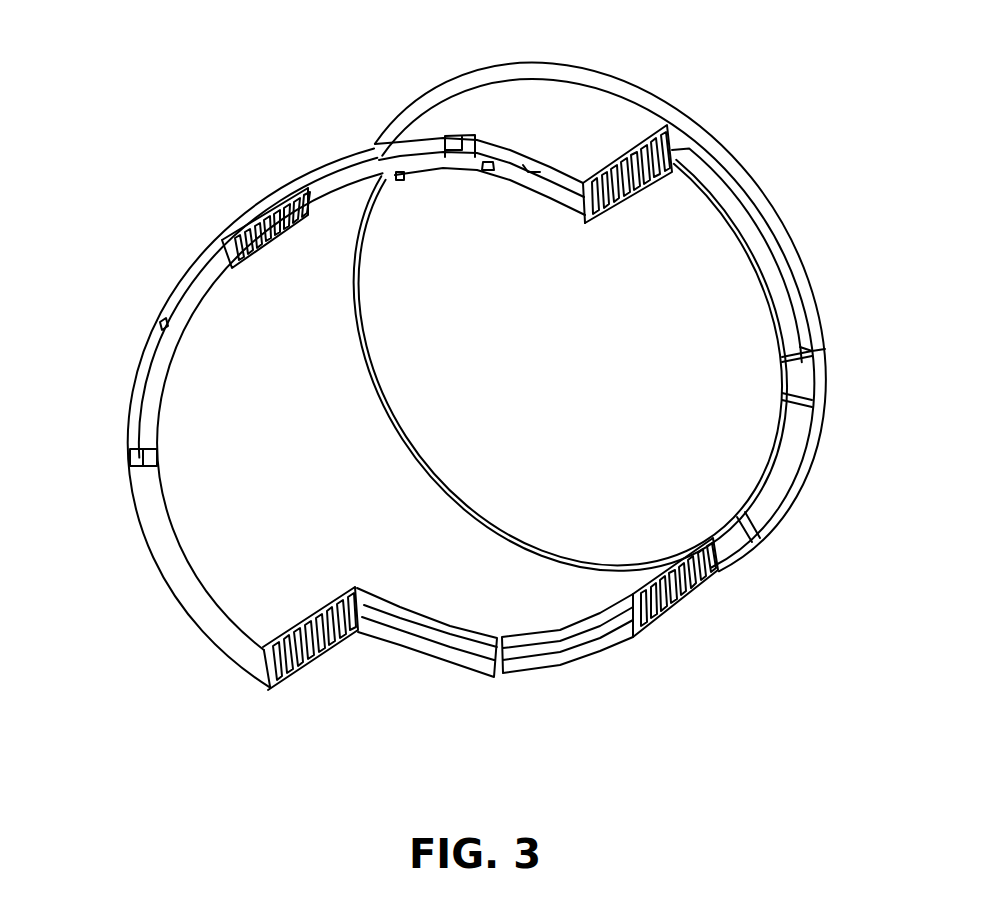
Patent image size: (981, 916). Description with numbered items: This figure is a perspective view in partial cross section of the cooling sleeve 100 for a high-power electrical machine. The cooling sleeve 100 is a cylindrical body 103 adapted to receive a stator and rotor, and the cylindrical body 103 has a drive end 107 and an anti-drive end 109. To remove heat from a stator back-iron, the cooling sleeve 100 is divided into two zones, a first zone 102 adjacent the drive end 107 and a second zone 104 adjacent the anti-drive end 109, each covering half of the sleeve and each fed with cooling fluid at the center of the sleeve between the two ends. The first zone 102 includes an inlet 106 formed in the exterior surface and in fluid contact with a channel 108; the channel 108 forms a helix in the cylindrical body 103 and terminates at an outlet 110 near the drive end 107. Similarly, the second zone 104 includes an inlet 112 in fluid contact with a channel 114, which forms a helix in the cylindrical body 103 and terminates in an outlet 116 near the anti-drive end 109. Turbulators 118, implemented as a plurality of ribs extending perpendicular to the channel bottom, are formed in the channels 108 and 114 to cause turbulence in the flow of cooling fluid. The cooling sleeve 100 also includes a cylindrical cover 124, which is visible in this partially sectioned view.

The cooling sleeve 100 is at (775, 148).
The first zone 102 is at (403, 742).
The cylindrical body 103 is at (393, 477).
The second zone 104 is at (738, 583).
The inlet 106 is at (413, 140).
The drive end 107 is at (120, 560).
The channel 108 is at (268, 215).
The anti-drive end 109 is at (634, 390).
The outlet 110 is at (130, 457).
The inlet 112 is at (462, 132).
The channel 114 is at (580, 214).
The outlet 116 is at (815, 355).
The turbulators 118 is at (490, 173).
The cylindrical cover 124 is at (150, 330).